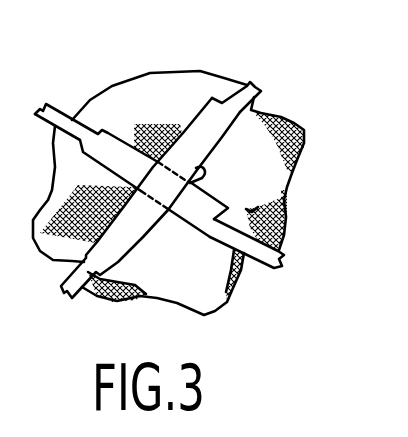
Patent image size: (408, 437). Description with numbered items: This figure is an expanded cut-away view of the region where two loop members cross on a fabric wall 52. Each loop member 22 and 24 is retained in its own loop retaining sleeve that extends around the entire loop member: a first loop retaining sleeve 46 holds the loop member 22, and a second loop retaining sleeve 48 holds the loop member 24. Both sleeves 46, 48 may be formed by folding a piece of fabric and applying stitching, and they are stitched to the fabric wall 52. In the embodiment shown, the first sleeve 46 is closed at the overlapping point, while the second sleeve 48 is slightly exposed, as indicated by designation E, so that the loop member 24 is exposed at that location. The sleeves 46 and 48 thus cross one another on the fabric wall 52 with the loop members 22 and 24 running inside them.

The loop member 22 is at (273, 266).
The loop member 24 is at (259, 88).
The first loop retaining sleeve 46 is at (115, 146).
The second loop retaining sleeve 48 is at (124, 247).
The fabric wall 52 is at (171, 114).
The exposed portion designation E is at (197, 166).